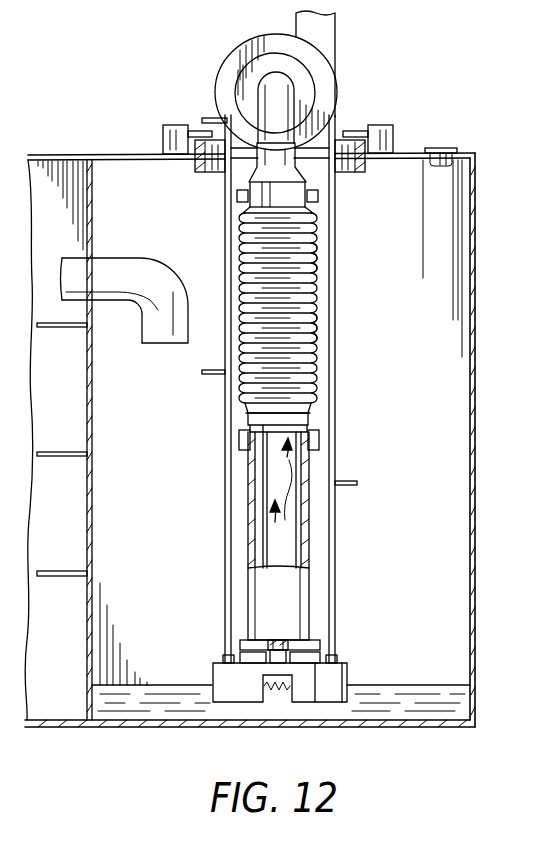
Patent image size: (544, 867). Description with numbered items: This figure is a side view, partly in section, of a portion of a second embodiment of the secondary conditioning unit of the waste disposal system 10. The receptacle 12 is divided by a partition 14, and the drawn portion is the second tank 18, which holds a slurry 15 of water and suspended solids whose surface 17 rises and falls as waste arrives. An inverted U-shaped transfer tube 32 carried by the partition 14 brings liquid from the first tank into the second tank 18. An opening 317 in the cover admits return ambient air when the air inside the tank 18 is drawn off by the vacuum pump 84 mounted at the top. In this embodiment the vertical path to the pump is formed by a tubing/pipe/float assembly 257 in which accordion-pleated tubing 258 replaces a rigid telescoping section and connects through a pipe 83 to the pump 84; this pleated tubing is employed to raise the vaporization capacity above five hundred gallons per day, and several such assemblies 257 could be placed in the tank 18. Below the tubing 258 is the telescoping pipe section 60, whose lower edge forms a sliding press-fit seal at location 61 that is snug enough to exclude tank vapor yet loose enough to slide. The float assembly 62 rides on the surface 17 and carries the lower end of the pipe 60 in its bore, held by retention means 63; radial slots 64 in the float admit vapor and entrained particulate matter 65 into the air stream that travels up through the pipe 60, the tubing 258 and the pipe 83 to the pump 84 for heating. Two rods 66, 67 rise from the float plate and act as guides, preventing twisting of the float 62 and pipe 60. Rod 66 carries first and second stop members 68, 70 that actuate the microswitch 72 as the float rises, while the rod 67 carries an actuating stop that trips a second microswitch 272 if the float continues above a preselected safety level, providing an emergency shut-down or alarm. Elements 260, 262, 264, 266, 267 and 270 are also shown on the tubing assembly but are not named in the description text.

The waste disposal system 10 is at (63, 69).
The receptacle 12 is at (477, 340).
The partition 14 is at (92, 490).
The slurry 15 is at (410, 708).
The surface 17 is at (409, 685).
The second tank 18 is at (163, 525).
The transfer tube 32 is at (122, 260).
The telescoping pipe section 60 is at (250, 585).
The press fit location 61 is at (285, 703).
The float assembly 62 is at (215, 663).
The retention means 63 is at (260, 640).
The float slots 64 is at (262, 690).
The particulate matter 65 is at (277, 533).
The rod 66 is at (225, 503).
The rod 67 is at (338, 553).
The first stop member 68 is at (212, 118).
The second stop member 70 is at (65, 328).
The microswitch 72 is at (163, 133).
The pipe 83 is at (290, 83).
The vacuum pump 84 is at (318, 60).
The tubing/pipe/float assembly 257 is at (352, 368).
The accordion-pleated tubing 258 is at (314, 301).
The lower collar 260 is at (248, 447).
The upper cap 262 is at (250, 208).
The bellows convolution 264 is at (314, 330).
The clamps 266 is at (237, 195).
The bellows convolution 267 is at (314, 267).
The mounts 270 is at (195, 163).
The microswitch 272 is at (393, 128).
The opening 317 is at (447, 148).